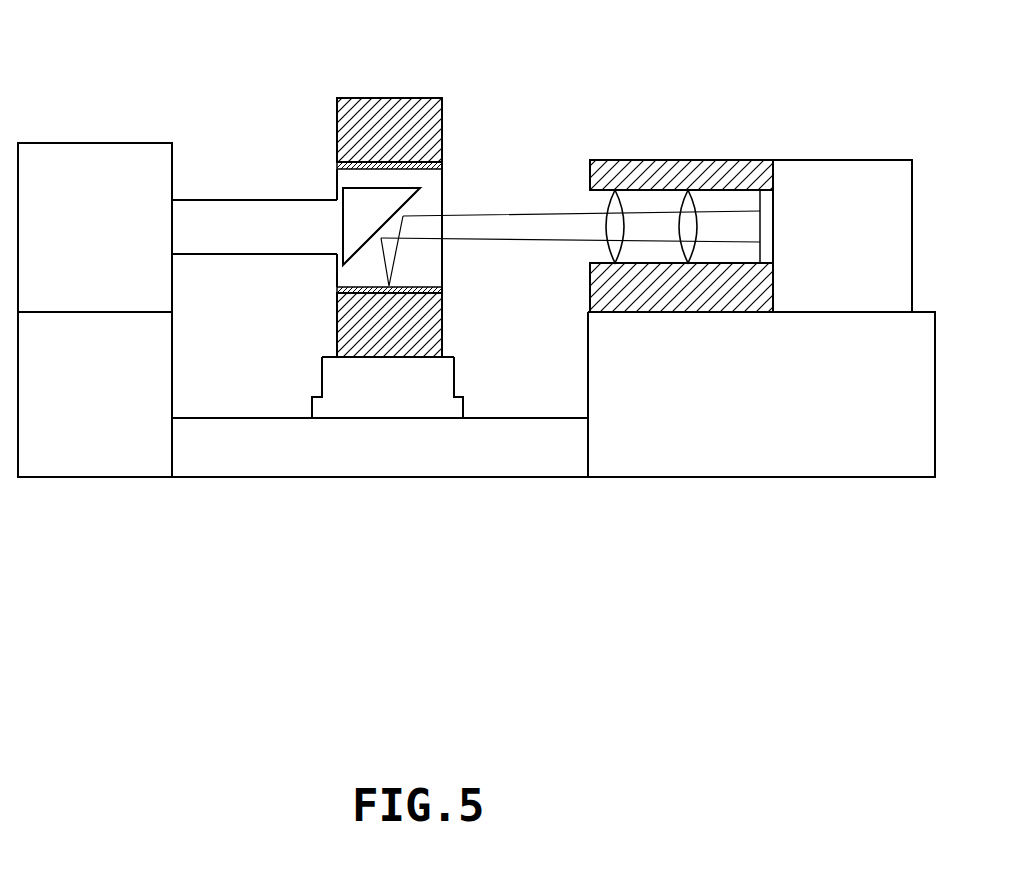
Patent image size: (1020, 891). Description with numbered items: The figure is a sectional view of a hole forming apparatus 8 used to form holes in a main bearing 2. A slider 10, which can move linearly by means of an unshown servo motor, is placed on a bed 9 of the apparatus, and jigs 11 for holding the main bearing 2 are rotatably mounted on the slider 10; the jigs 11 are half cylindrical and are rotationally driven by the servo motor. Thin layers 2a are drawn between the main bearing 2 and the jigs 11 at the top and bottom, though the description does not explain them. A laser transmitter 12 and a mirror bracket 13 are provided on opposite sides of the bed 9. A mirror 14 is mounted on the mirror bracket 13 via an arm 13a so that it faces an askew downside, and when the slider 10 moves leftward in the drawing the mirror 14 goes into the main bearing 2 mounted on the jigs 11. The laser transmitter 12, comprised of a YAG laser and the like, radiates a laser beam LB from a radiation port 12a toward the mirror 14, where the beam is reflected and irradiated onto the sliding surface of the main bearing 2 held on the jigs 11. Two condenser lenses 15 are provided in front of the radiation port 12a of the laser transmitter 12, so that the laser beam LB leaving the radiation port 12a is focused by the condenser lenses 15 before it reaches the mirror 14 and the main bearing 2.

The main bearing 2 is at (450, 295).
The bonding layer 2a is at (337, 165).
The hole forming apparatus 8 is at (388, 516).
The bed 9 is at (262, 479).
The slider 10 is at (455, 378).
The jigs 11 is at (440, 120).
The laser transmitter 12 is at (840, 133).
The radiation port 12a is at (765, 262).
The mirror bracket 13 is at (81, 133).
The arm 13a is at (230, 206).
The mirror 14 is at (420, 205).
The condenser lenses 15 is at (617, 200).
The laser beam LB is at (542, 220).